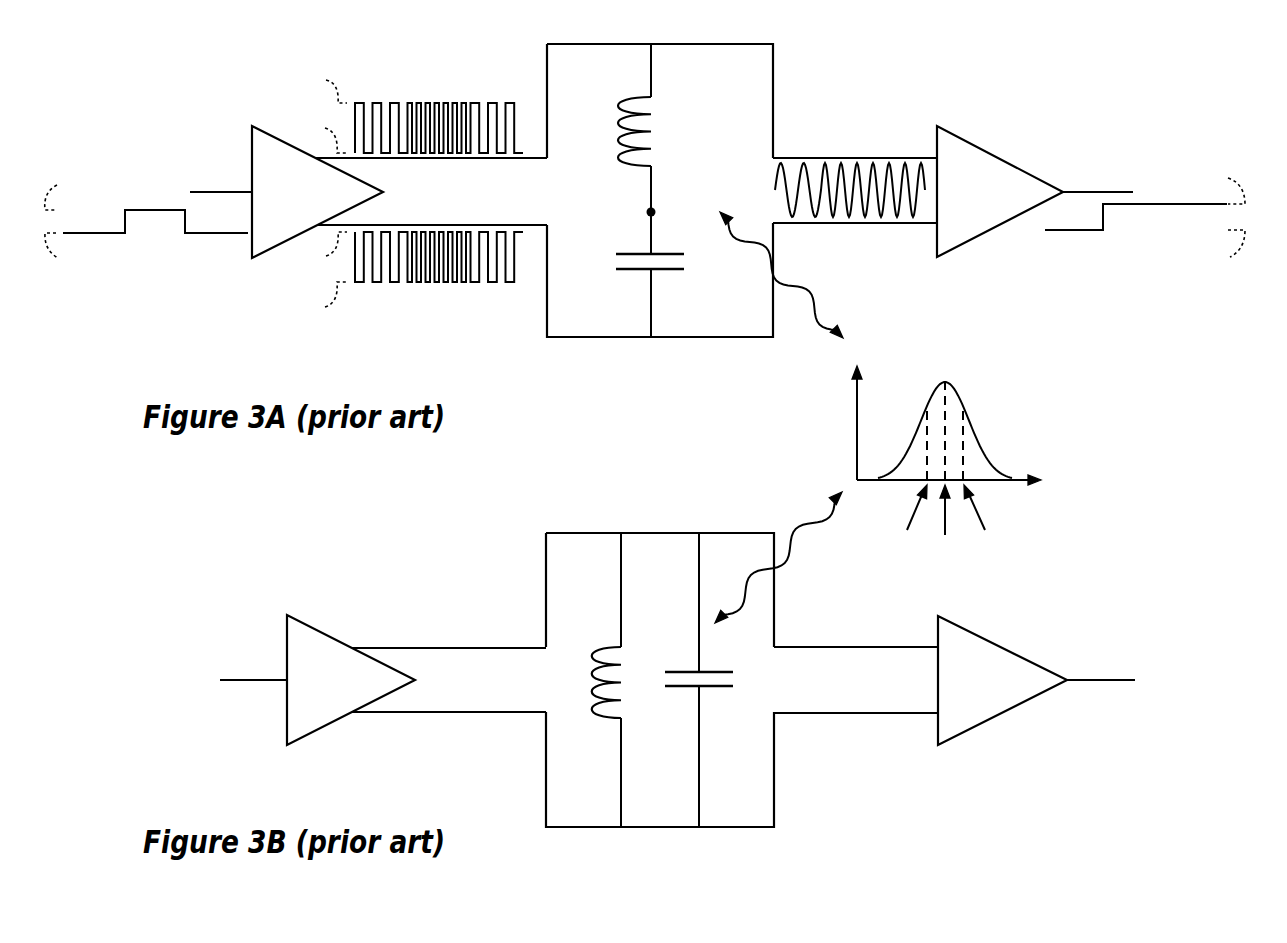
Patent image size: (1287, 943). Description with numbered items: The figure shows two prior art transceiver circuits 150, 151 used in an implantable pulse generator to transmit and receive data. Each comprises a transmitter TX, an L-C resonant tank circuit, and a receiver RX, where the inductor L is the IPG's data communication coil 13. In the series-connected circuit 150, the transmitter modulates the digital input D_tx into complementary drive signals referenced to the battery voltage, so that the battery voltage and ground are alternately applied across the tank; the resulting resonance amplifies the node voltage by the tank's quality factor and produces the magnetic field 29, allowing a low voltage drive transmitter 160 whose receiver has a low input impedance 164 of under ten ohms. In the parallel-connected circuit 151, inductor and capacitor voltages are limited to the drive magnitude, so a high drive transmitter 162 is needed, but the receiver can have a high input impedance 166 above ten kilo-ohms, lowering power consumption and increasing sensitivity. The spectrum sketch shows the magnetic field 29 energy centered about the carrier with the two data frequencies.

In FIG. 3A, the transceiver circuit 150 is at (232, 36).
In FIG. 3A, the low voltage drive transmitter 160 is at (252, 133).
In FIG. 3A, the data communication coil 13 is at (671, 131).
In FIG. 3B, the data communication coil 13 is at (574, 682).
In FIG. 3A, the low input impedance 164 is at (973, 142).
In FIG. 3A, the magnetic field 29 is at (818, 308).
In FIG. 3B, the transceiver circuit 151 is at (233, 530).
In FIG. 3B, the high drive transmitter 162 is at (283, 633).
In FIG. 3B, the high input impedance 166 is at (975, 635).